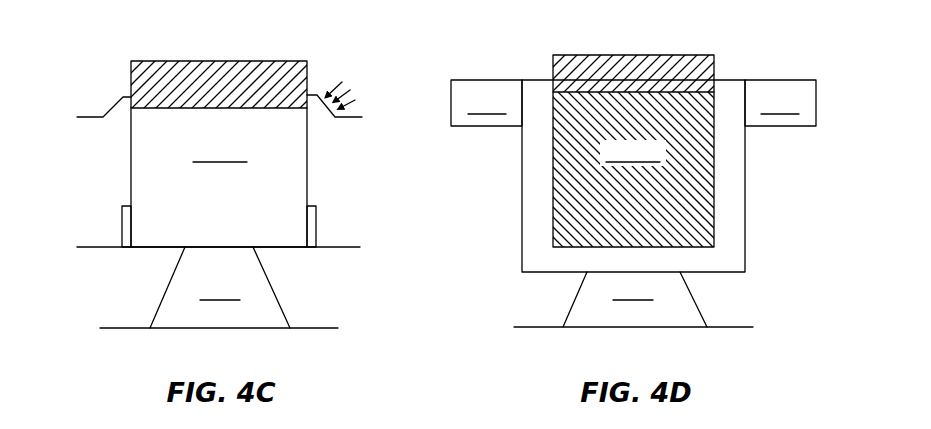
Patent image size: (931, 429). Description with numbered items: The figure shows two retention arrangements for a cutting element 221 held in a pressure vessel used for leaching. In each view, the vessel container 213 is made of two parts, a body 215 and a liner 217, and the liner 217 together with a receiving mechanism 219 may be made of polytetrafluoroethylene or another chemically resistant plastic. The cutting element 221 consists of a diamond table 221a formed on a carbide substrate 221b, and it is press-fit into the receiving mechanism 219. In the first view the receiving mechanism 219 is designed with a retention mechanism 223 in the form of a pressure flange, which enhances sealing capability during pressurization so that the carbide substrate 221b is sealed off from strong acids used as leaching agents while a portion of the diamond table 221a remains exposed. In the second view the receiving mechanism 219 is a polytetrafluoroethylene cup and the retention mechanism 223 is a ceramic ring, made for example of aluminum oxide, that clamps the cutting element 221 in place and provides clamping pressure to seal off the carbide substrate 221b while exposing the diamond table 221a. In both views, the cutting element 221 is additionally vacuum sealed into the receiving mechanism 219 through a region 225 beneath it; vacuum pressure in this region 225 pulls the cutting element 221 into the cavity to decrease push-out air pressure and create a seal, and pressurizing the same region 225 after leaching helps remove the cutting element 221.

In FIG. 4C, the container 213 is at (140, 346).
In FIG. 4D, the container 213 is at (553, 346).
In FIG. 4C, the body 215 is at (125, 332).
In FIG. 4D, the body 215 is at (538, 332).
In FIG. 4C, the liner 217 is at (90, 117).
In FIG. 4D, the liner 217 is at (500, 80).
In FIG. 4C, the receiving mechanism 219 is at (131, 182).
In FIG. 4D, the receiving mechanism 219 is at (522, 182).
In FIG. 4C, the cutting element 221 is at (292, 182).
In FIG. 4D, the cutting element 221 is at (705, 182).
In FIG. 4C, the diamond table 221a is at (247, 61).
In FIG. 4D, the diamond table 221a is at (662, 55).
In FIG. 4C, the carbide substrate 221b is at (220, 151).
In FIG. 4D, the carbide substrate 221b is at (630, 169).
In FIG. 4C, the retention mechanism 223 is at (350, 100).
In FIG. 4D, the retention mechanism 223 is at (633, 103).
In FIG. 4C, the vacuum sealed region 225 is at (220, 287).
In FIG. 4D, the vacuum sealed region 225 is at (635, 299).